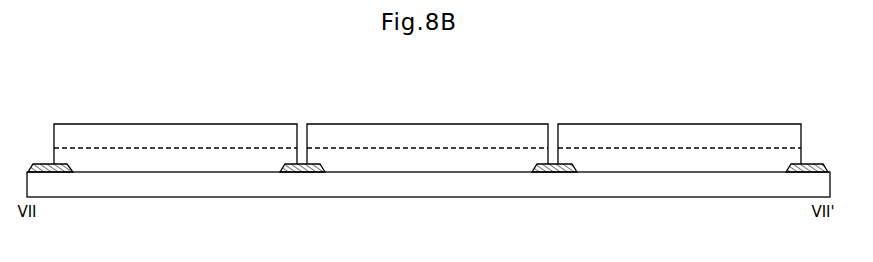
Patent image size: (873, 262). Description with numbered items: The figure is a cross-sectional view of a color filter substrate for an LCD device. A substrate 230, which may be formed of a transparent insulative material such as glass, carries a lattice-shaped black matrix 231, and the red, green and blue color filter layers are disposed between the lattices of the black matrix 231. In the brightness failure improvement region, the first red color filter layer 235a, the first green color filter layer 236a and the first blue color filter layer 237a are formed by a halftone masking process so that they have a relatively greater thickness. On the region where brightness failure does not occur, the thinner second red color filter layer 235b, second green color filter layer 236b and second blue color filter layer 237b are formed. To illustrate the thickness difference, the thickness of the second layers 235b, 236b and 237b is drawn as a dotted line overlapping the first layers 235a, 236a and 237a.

The substrate 230 is at (437, 185).
The black matrix 231 is at (808, 162).
The first red color filter layer 235a is at (257, 138).
The second red color filter layer 235b is at (134, 148).
The first green color filter layer 236a is at (508, 135).
The second green color filter layer 236b is at (340, 148).
The first blue color filter layer 237a is at (762, 138).
The second blue color filter layer 237b is at (614, 148).